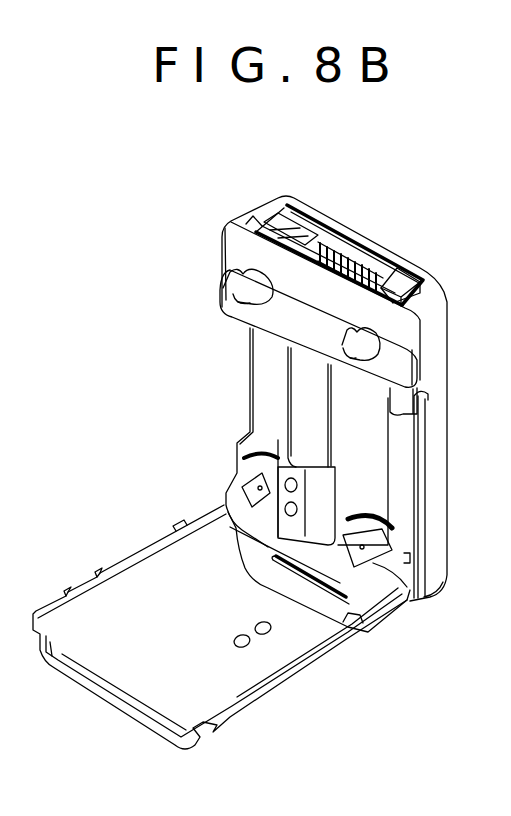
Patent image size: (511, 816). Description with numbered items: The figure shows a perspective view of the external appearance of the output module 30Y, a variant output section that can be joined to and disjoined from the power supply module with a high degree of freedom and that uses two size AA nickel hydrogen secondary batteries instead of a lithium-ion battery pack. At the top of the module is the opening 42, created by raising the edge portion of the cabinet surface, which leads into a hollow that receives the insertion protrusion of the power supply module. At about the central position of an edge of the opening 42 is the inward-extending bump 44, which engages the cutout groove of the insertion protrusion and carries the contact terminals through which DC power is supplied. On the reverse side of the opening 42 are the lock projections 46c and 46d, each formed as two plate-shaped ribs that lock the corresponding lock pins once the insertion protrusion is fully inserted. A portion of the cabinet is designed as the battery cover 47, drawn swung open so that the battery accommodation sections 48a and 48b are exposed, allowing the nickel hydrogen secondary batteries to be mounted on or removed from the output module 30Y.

The output module 30Y is at (232, 246).
The opening 42 is at (278, 230).
The bump 44 is at (346, 247).
The lock projection 46c is at (304, 221).
The lock projection 46d is at (415, 278).
The battery cover 47 is at (145, 586).
The battery accommodation section 48a is at (257, 413).
The battery accommodation section 48b is at (375, 456).